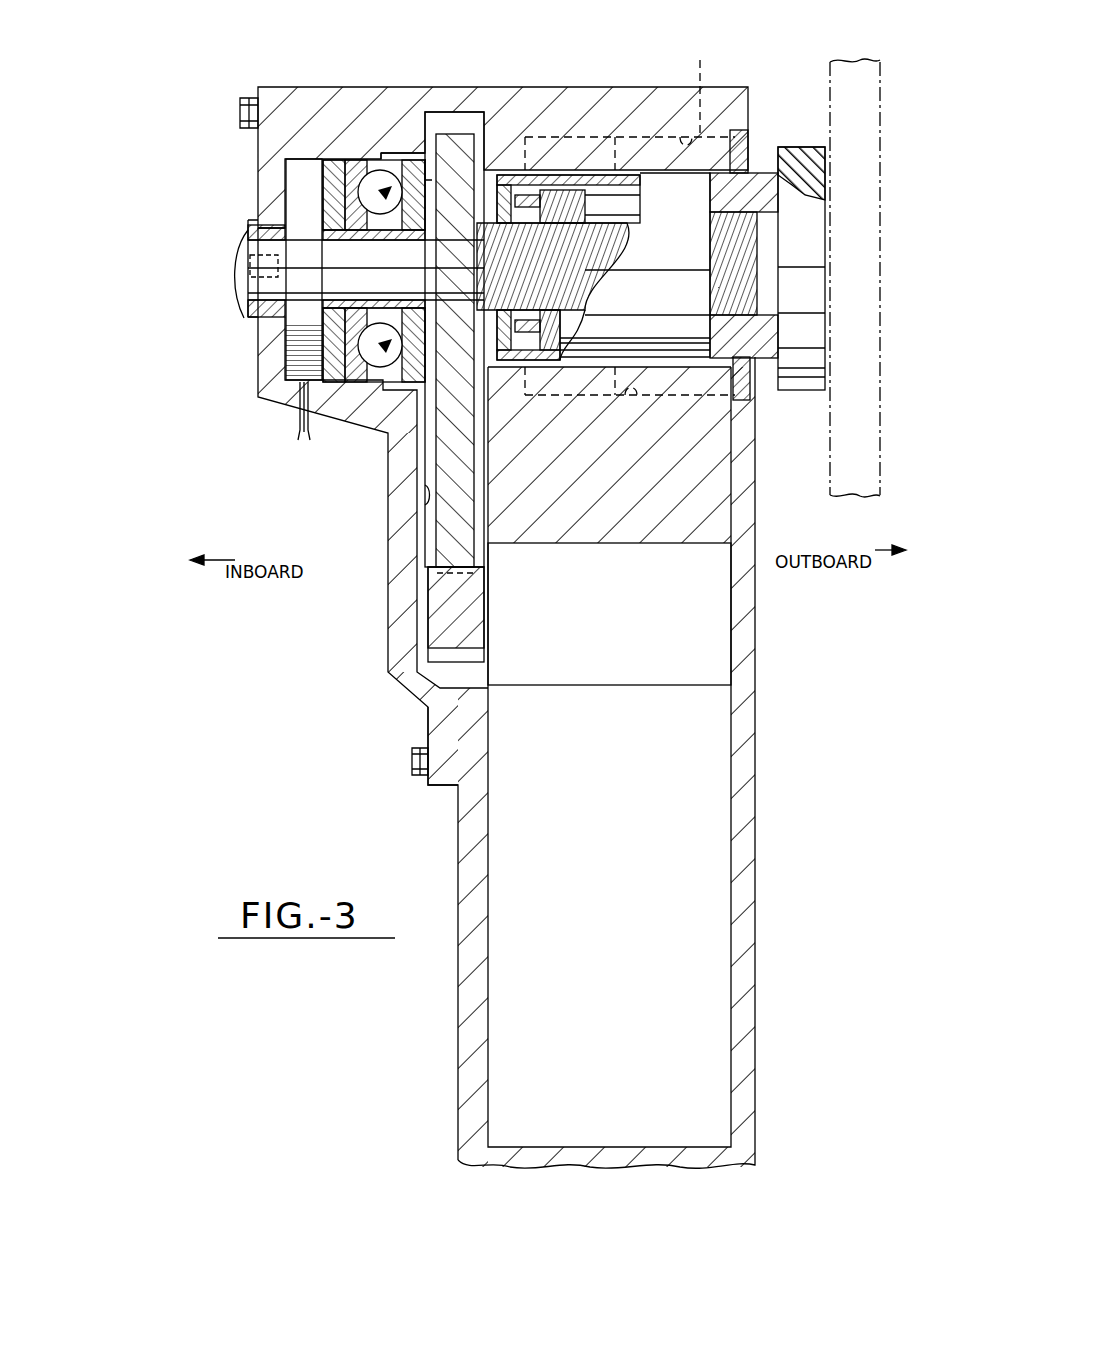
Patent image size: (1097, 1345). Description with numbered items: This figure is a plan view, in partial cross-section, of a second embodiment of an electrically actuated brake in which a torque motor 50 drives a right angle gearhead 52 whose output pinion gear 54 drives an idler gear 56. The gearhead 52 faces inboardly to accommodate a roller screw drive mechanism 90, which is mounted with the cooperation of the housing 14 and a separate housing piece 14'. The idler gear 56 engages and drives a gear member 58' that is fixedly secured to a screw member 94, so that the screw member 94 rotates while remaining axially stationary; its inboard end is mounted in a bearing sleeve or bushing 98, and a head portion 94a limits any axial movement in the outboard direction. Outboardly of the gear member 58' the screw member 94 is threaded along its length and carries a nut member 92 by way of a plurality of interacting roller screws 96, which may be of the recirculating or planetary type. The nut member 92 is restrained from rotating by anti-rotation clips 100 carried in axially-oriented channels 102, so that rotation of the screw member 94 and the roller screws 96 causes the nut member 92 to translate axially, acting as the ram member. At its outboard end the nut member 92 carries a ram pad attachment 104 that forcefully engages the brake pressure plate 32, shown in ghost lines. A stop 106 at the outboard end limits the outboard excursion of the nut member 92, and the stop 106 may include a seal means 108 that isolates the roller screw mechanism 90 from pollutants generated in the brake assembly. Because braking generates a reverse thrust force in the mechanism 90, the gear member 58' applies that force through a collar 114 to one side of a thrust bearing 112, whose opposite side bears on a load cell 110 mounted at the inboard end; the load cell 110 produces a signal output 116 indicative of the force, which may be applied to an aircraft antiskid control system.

The housing 14 is at (497, 627).
The separate housing piece 14' is at (400, 746).
The brake pressure plate 32 is at (850, 62).
The torque motor 50 is at (621, 858).
The right angle gearhead 52 is at (613, 631).
The output pinion gear 54 is at (448, 603).
The idler gear 56 is at (448, 472).
The gear member 58' is at (439, 304).
The roller screw drive mechanism 90 is at (773, 120).
The nut member 92 is at (658, 178).
The screw member 94 is at (258, 250).
The head portion 94a is at (244, 312).
The roller screws 96 is at (585, 215).
The bearing sleeve or bushing 98 is at (275, 228).
The anti-rotation clips 100 is at (580, 140).
The axially-oriented channels 102 is at (700, 135).
The ram pad attachment 104 is at (822, 338).
The stop 106 is at (750, 385).
The seal means 108 is at (752, 165).
The load cell 110 is at (297, 175).
The thrust bearing 112 is at (375, 160).
The collar 114 is at (432, 180).
The signal output 116 is at (300, 423).